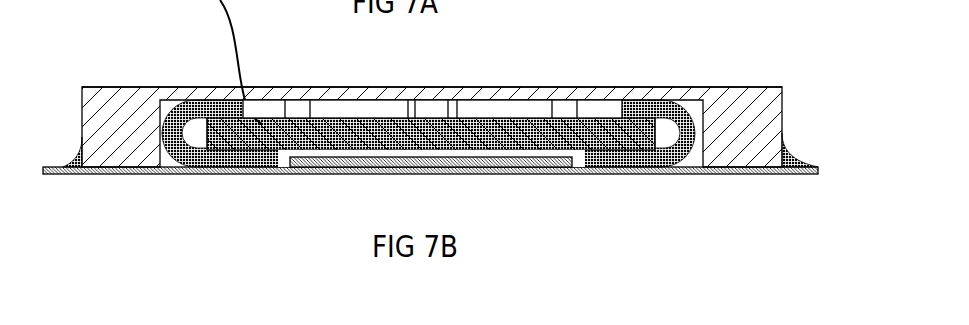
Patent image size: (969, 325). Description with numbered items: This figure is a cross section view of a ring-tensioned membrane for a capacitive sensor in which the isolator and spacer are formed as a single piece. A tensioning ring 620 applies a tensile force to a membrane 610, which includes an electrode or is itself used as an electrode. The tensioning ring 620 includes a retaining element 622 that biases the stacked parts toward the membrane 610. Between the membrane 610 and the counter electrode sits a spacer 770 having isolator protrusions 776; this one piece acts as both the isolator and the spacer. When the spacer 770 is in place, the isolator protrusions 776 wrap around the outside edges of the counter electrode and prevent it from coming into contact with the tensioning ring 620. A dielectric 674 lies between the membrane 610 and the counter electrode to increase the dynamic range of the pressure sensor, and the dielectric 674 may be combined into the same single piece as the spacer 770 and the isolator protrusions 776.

The membrane 610 is at (718, 167).
The tensioning ring 620 is at (781, 88).
The retaining element 622 is at (640, 88).
The dielectric 674 is at (510, 160).
The spacer 770 is at (195, 153).
The isolator protrusions 776 is at (172, 108).